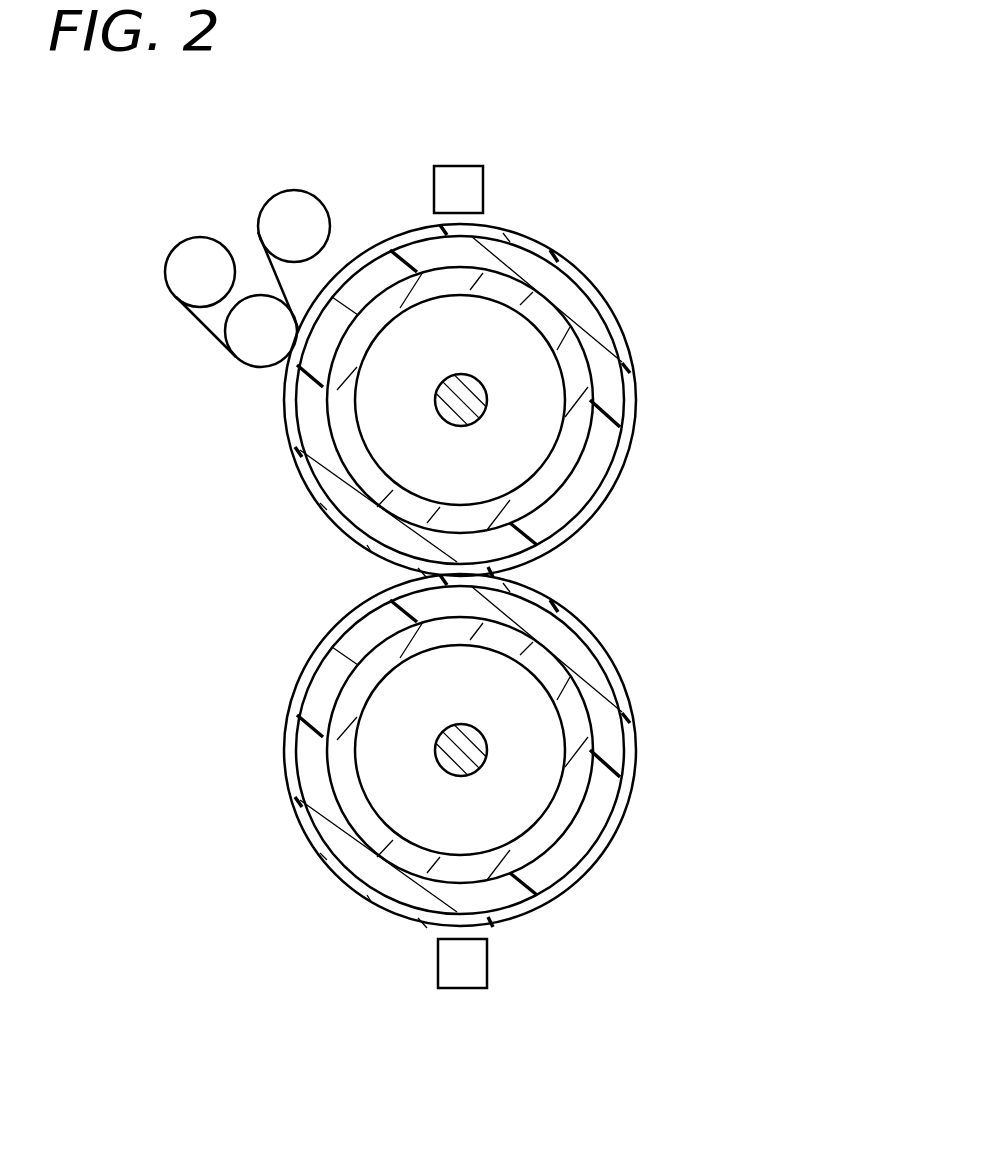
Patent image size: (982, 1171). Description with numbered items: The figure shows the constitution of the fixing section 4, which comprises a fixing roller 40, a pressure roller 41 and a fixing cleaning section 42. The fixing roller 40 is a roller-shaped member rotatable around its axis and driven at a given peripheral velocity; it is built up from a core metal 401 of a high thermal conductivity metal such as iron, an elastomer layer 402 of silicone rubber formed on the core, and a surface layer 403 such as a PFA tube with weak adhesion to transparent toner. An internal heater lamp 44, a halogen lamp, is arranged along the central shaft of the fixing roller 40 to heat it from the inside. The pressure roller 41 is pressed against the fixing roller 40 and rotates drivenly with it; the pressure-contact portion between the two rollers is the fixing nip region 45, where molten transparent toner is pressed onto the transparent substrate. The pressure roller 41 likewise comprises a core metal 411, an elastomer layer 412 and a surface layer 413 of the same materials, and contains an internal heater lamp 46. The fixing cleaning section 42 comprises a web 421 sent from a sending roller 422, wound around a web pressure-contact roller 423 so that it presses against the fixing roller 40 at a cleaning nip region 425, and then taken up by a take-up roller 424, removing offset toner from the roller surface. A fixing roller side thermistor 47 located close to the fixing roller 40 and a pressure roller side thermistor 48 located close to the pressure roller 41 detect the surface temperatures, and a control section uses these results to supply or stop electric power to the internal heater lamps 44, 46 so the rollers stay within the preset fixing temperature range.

The fixing section 4 is at (688, 195).
The fixing roller 40 is at (690, 318).
The core metal 401 is at (572, 437).
The elastomer layer 402 is at (612, 390).
The surface layer 403 is at (570, 273).
The pressure roller 41 is at (690, 662).
The core metal 411 is at (573, 783).
The elastomer layer 412 is at (612, 735).
The surface layer 413 is at (573, 620).
The fixing cleaning section 42 is at (183, 175).
The web 421 is at (198, 322).
The sending roller 422 is at (177, 262).
The web pressure-contact roller 423 is at (252, 360).
The take-up roller 424 is at (292, 202).
The cleaning nip region 425 is at (312, 383).
The internal heater lamp 44 is at (465, 397).
The fixing nip region 45 is at (465, 558).
The internal heater lamp 46 is at (465, 747).
The fixing roller side thermistor 47 is at (470, 190).
The pressure roller side thermistor 48 is at (477, 965).